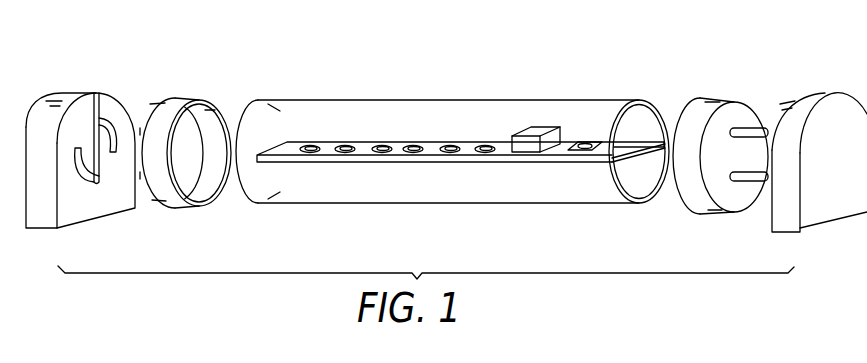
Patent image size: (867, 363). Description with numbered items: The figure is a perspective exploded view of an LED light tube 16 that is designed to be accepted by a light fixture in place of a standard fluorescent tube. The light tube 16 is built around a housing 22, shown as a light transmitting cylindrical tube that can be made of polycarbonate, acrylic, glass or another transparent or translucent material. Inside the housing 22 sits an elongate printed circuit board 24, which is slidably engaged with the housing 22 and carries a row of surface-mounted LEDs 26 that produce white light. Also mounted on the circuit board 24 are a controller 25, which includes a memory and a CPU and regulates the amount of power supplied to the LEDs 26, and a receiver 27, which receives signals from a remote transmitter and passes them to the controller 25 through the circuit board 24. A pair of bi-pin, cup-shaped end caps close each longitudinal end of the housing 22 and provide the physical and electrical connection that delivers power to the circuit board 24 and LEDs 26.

The LED light tube 16 is at (296, 93).
The housing 22 is at (530, 206).
The circuit board 24 is at (335, 163).
The LEDs 26 is at (357, 146).
The controller 25 is at (525, 128).
The receiver 27 is at (588, 140).